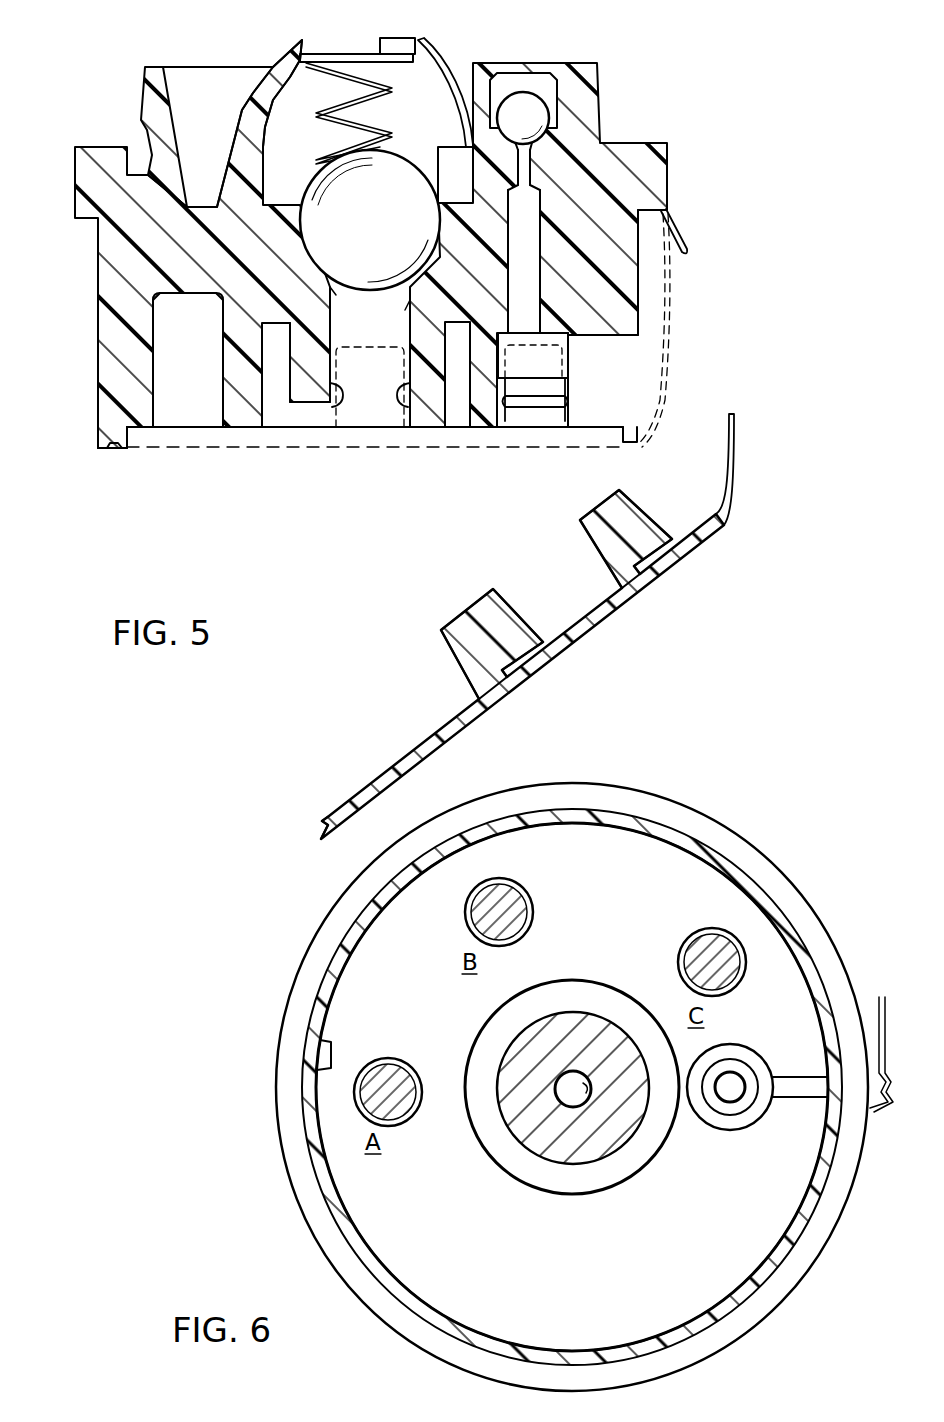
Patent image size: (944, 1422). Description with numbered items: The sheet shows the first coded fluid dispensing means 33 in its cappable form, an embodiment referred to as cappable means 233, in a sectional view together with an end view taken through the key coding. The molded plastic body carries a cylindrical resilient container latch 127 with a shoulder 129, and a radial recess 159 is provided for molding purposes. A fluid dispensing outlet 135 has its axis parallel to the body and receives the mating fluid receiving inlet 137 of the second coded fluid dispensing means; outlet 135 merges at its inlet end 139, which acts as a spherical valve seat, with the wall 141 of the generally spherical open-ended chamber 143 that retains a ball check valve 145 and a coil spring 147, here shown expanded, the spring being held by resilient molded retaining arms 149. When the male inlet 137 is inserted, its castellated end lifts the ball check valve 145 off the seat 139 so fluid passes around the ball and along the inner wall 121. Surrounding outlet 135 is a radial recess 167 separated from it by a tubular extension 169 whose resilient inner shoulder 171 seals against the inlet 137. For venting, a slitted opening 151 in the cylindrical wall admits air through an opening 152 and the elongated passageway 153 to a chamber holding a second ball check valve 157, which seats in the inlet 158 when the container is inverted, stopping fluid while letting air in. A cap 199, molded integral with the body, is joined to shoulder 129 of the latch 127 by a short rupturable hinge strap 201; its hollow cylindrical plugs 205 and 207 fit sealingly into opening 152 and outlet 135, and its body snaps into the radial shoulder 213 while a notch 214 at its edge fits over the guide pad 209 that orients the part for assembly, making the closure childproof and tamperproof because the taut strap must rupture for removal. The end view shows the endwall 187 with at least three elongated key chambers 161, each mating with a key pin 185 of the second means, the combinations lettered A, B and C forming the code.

In FIG. 6, the first coded fluid dispensing means 33 is at (268, 1082).
In FIG. 6, the inner wall 121 is at (590, 1095).
In FIG. 5, the cylindrical resilient container latch 127 is at (668, 172).
In FIG. 6, the cylindrical resilient container latch 127 is at (738, 832).
In FIG. 6, the shoulder 129 is at (770, 872).
In FIG. 5, the fluid dispensing outlet 135 is at (412, 310).
In FIG. 6, the fluid receiving inlet 137 is at (530, 1145).
In FIG. 5, the inlet end (spherical valve seat) 139 is at (328, 290).
In FIG. 5, the wall 141 is at (440, 68).
In FIG. 5, the chamber 143 is at (287, 162).
In FIG. 5, the ball check valve 145 is at (386, 230).
In FIG. 6, the ball check valve 145 is at (556, 1078).
In FIG. 5, the coil spring 147 is at (334, 54).
In FIG. 5, the resilient molded retaining arms 149 is at (400, 38).
In FIG. 5, the slitted opening 151 is at (630, 392).
In FIG. 6, the slitted opening 151 is at (805, 1098).
In FIG. 5, the opening 152 is at (547, 336).
In FIG. 6, the opening 152 is at (748, 1112).
In FIG. 5, the air inlet chamber (elongated passageway) 153 is at (533, 266).
In FIG. 6, the air inlet chamber (elongated passageway) 153 is at (728, 1103).
In FIG. 5, the ball check valve 157 is at (525, 100).
In FIG. 5, the inlet 158 is at (536, 158).
In FIG. 5, the radial recess 159 is at (214, 129).
In FIG. 5, the key chamber 161 is at (196, 362).
In FIG. 6, the key chamber 161 is at (533, 918).
In FIG. 5, the radial recess 167 is at (268, 320).
In FIG. 6, the radial recess 167 is at (620, 1175).
In FIG. 5, the tubular extension 169 is at (433, 394).
In FIG. 5, the resilient inner shoulder 171 is at (340, 410).
In FIG. 6, the key pin 185 is at (535, 866).
In FIG. 5, the endwall 187 is at (251, 430).
In FIG. 6, the endwall 187 is at (579, 1287).
In FIG. 5, the cap 199 is at (419, 461).
In FIG. 5, the rupturable hinge strap 201 is at (686, 247).
In FIG. 6, the rupturable hinge strap 201 is at (882, 1038).
In FIG. 5, the plug 205 is at (570, 362).
In FIG. 5, the plug 207 is at (360, 346).
In FIG. 5, the guide pad 209 is at (112, 430).
In FIG. 6, the guide pad 209 is at (333, 1048).
In FIG. 5, the radial shoulder 213 is at (107, 448).
In FIG. 5, the notch 214 is at (130, 438).
In FIG. 5, the cappable means 233 is at (682, 152).